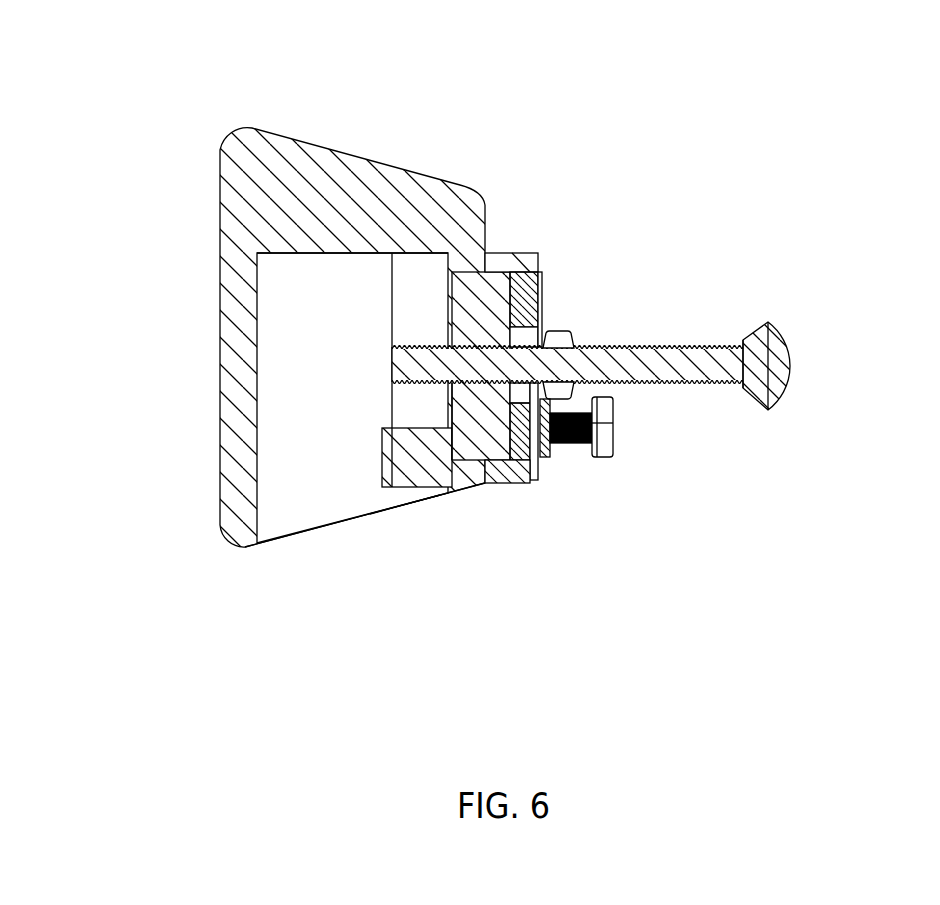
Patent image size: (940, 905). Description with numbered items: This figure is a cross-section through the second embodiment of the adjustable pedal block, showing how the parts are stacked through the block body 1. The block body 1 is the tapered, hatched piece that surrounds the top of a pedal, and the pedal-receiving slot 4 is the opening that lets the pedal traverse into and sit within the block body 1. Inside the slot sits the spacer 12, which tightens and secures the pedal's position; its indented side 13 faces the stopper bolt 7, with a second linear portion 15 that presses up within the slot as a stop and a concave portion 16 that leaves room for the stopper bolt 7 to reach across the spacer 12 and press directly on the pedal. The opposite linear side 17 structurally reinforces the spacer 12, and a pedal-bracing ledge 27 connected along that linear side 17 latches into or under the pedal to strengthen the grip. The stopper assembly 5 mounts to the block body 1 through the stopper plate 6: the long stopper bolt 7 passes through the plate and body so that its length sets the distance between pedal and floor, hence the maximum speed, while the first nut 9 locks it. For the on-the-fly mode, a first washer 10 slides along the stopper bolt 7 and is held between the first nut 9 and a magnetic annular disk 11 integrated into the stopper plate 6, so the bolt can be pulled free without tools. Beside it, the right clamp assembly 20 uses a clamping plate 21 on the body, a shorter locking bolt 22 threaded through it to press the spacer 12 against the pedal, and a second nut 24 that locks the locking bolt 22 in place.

The block body 1 is at (205, 192).
The pedal-receiving slot 4 is at (284, 540).
The stopper assembly 5 is at (803, 358).
The stopper plate 6 is at (497, 253).
The stopper bolt 7 is at (648, 347).
The first nut 9 is at (560, 332).
The first washer 10 is at (540, 272).
The magnetic annular disk 11 is at (532, 480).
The spacer 12 is at (385, 320).
The indented side 13 is at (392, 402).
The second linear portion 15 is at (410, 253).
The concave portion 16 is at (452, 425).
The linear side 17 is at (395, 492).
The right clamp assembly 20 is at (632, 425).
The clamping plate 21 is at (495, 483).
The locking bolt 22 is at (612, 445).
The second nut 24 is at (550, 455).
The pedal-bracing ledge 27 is at (385, 462).